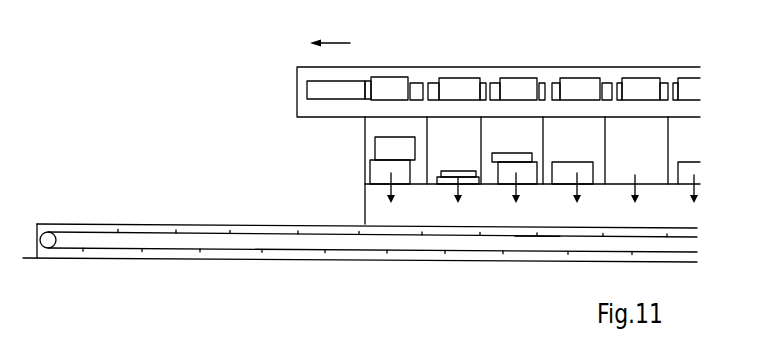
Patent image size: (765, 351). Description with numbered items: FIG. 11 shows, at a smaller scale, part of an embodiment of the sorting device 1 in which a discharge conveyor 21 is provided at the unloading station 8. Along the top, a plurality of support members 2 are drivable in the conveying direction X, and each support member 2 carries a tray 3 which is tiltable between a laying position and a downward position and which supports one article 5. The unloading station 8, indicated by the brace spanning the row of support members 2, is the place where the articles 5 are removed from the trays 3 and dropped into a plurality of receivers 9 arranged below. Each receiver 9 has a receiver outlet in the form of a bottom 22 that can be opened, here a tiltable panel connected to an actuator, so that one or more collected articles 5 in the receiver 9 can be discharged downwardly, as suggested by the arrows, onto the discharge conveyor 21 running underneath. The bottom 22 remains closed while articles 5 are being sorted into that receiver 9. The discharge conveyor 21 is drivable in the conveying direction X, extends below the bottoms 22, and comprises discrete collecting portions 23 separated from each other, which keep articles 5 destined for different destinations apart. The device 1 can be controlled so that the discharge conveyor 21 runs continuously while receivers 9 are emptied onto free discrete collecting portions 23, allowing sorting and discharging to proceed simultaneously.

The sorting device 1 is at (258, 53).
The support member 2 is at (312, 70).
The tray 3 is at (350, 97).
The article 5 is at (382, 147).
The unloading station 8 is at (703, 54).
The receiver 9 is at (375, 130).
The discharge conveyor 21 is at (248, 237).
The bottom 22 is at (418, 185).
The discrete collecting portion 23 is at (556, 236).